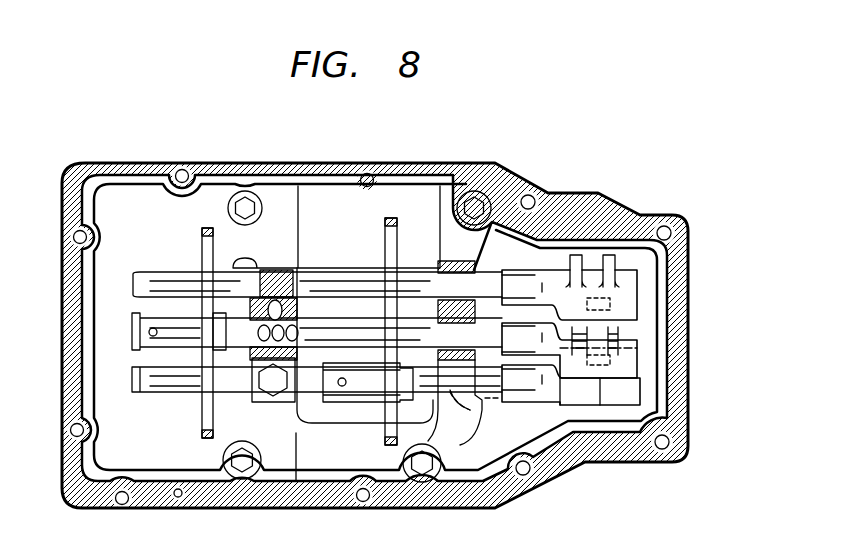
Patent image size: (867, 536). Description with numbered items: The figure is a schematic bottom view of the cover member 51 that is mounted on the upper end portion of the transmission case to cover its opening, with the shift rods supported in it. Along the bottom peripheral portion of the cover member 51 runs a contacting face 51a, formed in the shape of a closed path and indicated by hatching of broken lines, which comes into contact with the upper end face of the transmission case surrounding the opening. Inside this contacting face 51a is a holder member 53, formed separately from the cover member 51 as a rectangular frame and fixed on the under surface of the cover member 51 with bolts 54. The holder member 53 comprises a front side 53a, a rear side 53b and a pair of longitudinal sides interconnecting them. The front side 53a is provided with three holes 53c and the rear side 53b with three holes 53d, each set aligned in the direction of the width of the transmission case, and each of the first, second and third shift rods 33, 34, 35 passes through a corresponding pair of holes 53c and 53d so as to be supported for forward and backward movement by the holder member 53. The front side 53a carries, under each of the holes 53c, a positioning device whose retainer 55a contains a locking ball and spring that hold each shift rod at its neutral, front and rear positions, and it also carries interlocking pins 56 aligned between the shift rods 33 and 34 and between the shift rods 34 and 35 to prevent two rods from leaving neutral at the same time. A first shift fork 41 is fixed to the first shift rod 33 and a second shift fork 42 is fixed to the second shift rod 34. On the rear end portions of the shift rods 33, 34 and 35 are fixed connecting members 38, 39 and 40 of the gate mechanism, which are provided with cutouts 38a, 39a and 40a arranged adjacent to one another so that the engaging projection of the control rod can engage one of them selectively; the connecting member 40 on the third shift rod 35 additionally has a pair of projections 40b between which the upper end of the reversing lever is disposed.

The first shift rod 33 is at (134, 384).
The second shift rod 34 is at (135, 331).
The third shift rod 35 is at (134, 278).
The connecting member 38 is at (633, 391).
The cutout 38a is at (607, 362).
The connecting member 39 is at (602, 337).
The cutout 39a is at (604, 353).
The connecting member 40 is at (635, 291).
The cutout 40a is at (606, 311).
The projections 40b is at (570, 260).
The first shift fork 41 is at (386, 432).
The second shift fork 42 is at (200, 407).
The cover member 51 is at (207, 165).
The contacting face 51a is at (498, 170).
The holder member 53 is at (402, 203).
The front side 53a is at (302, 268).
The rear side 53b is at (478, 268).
The holes 53c is at (264, 275).
The holes 53d is at (450, 306).
The bolts 54 is at (229, 209).
The retainer 55a is at (279, 399).
The interlocking pins 56 is at (290, 313).